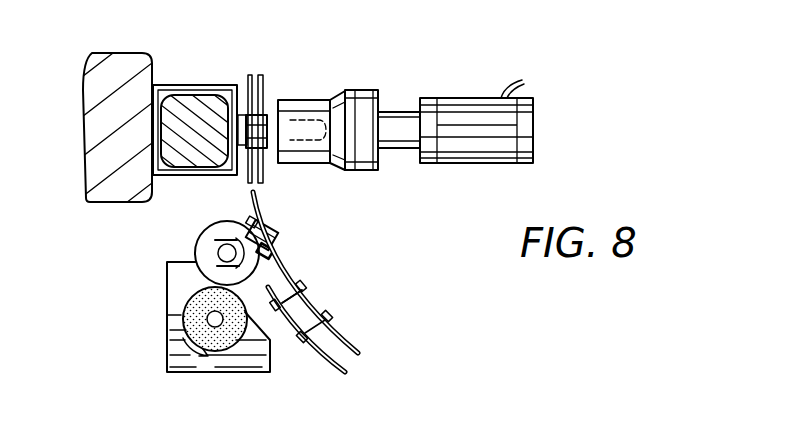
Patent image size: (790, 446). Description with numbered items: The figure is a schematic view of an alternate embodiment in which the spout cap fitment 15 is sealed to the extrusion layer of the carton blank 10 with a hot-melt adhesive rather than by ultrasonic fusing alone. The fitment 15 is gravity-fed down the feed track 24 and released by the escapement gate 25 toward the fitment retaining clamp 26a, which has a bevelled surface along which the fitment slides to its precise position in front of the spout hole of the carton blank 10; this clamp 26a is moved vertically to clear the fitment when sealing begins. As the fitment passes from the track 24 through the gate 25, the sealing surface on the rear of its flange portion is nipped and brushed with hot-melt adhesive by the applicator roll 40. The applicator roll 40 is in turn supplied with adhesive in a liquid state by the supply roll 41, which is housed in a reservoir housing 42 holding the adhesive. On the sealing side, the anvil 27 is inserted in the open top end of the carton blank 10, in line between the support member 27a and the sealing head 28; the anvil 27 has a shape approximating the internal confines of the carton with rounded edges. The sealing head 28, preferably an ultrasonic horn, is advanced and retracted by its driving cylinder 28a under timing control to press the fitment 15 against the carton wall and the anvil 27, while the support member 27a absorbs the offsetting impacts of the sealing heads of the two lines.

The support member 27a is at (133, 68).
The carton blank 10 is at (172, 85).
The anvil 27 is at (200, 110).
The fitment retaining clamp 26a is at (266, 93).
The spout cap fitment 15 is at (272, 105).
The sealing head 28 is at (358, 94).
The driving cylinder 28a is at (455, 100).
The applicator roll 40 is at (210, 240).
The supply roll 41 is at (186, 305).
The reservoir housing 42 is at (253, 362).
The feed track 24 is at (356, 345).
The escapement gate 25 is at (300, 290).